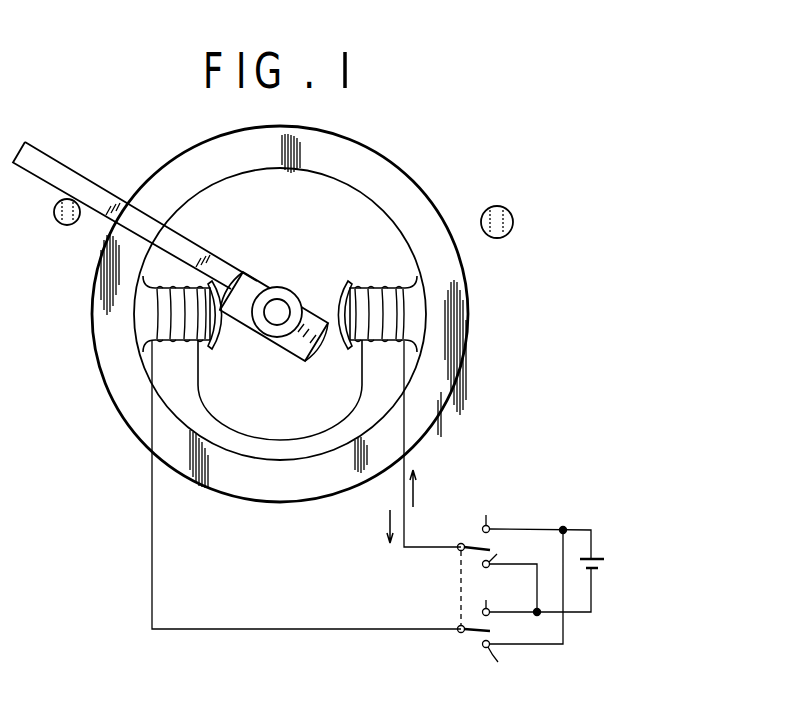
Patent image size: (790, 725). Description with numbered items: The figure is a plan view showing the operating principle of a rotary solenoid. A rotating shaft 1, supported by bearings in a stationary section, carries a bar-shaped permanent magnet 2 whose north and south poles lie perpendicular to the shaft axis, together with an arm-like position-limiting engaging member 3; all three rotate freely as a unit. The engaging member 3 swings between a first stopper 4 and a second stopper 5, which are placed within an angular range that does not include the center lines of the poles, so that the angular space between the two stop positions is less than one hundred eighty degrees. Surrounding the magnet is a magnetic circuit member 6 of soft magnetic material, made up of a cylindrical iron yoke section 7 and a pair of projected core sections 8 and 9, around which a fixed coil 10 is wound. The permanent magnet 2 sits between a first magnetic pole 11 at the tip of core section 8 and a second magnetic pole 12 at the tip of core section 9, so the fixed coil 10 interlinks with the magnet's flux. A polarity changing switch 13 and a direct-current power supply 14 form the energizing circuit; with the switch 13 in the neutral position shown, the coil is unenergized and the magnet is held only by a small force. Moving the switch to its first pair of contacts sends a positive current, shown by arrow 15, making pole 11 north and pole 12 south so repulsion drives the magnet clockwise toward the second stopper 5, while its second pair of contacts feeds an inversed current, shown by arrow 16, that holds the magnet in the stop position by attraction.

The rotating shaft 1 is at (280, 297).
The permanent magnet 2 is at (252, 272).
The engaging member 3 is at (40, 153).
The first stopper 4 is at (63, 225).
The second stopper 5 is at (497, 206).
The magnetic circuit member 6 is at (348, 135).
The yoke section 7 is at (385, 168).
The core section 8 is at (172, 341).
The core section 9 is at (372, 286).
The fixed coil 10 is at (150, 311).
The first magnetic pole 11 is at (224, 336).
The second magnetic pole 12 is at (340, 350).
The polarity changing switch 13 is at (461, 624).
The direct-current power supply 14 is at (597, 556).
The arrow 15 is at (418, 493).
The arrow 16 is at (386, 520).